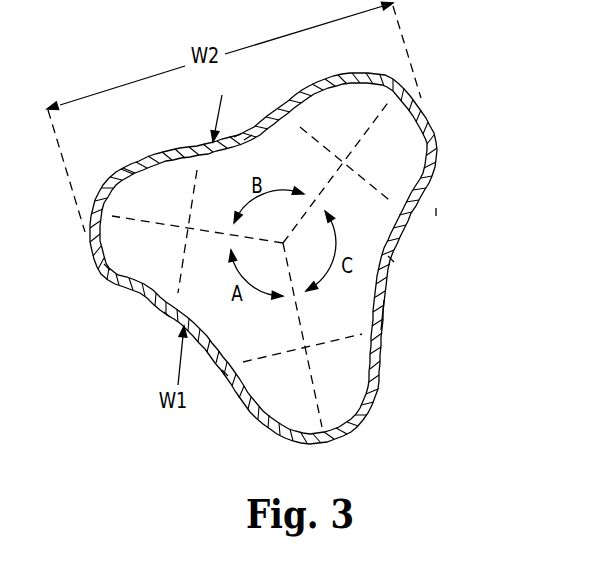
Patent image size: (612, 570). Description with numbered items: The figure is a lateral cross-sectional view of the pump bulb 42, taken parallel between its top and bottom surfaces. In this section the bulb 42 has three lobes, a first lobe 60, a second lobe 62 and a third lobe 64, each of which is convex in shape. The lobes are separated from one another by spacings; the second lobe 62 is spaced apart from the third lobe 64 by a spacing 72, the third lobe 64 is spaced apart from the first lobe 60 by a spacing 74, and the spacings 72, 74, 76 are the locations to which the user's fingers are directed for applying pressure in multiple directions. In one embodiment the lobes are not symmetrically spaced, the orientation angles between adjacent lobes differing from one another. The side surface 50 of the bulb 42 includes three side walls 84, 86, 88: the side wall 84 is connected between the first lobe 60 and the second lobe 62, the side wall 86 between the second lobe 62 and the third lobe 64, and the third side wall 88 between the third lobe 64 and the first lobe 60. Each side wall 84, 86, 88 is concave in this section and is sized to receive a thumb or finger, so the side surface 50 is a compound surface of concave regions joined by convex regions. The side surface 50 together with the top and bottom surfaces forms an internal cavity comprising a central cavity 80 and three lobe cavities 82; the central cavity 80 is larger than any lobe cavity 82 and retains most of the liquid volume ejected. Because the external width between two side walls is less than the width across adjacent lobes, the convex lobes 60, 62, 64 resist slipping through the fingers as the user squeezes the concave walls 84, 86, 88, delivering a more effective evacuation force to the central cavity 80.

The pump bulb 42 is at (439, 160).
The side surface 50 is at (384, 292).
The first lobe 60 is at (350, 434).
The second lobe 62 is at (110, 181).
The third lobe 64 is at (424, 100).
The spacing 72 is at (167, 320).
The spacing 74 is at (238, 130).
The spacing 76 is at (440, 212).
The central cavity 80 is at (275, 217).
The lobe cavity 82 is at (135, 257).
The side wall 84 is at (224, 372).
The side wall 86 is at (247, 136).
The third side wall 88 is at (392, 260).